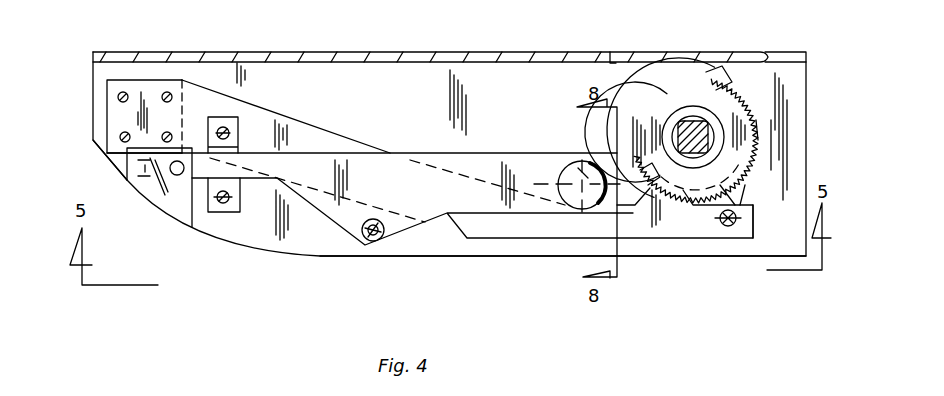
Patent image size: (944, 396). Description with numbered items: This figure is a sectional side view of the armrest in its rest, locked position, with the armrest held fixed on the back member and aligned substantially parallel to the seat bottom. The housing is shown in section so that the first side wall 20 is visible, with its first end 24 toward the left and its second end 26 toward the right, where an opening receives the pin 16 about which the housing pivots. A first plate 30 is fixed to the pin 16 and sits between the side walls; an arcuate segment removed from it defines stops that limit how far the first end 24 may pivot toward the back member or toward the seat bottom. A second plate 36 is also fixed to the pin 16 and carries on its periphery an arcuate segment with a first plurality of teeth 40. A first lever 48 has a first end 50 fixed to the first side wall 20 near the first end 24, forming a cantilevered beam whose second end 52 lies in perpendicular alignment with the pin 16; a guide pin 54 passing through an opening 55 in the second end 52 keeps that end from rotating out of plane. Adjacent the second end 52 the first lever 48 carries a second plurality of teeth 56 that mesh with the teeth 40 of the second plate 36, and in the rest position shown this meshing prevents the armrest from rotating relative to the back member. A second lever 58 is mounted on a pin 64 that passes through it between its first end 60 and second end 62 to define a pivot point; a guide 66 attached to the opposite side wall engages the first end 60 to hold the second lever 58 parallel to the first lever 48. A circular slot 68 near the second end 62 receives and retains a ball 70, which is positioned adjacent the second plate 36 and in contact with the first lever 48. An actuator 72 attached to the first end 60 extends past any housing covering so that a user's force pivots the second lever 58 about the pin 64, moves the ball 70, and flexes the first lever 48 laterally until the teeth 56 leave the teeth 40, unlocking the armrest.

The pin 16 is at (691, 118).
The first side wall 20 is at (318, 256).
The first end 24 is at (93, 70).
The second end 26 is at (807, 127).
The first plate 30 is at (660, 80).
The second plate 36 is at (747, 93).
The first plurality of teeth 40 is at (757, 107).
The first lever 48 is at (302, 123).
The first end 50 is at (122, 82).
The second end 52 is at (757, 208).
The guide pin 54 is at (727, 228).
The opening 55 is at (753, 208).
The second plurality of teeth 56 is at (695, 199).
The second lever 58 is at (401, 226).
The first end 60 is at (122, 165).
The second end 62 is at (618, 208).
The pin 64 is at (372, 241).
The guide 66 is at (231, 126).
The circular slot 68 is at (569, 204).
The ball 70 is at (580, 170).
The actuator 72 is at (180, 213).